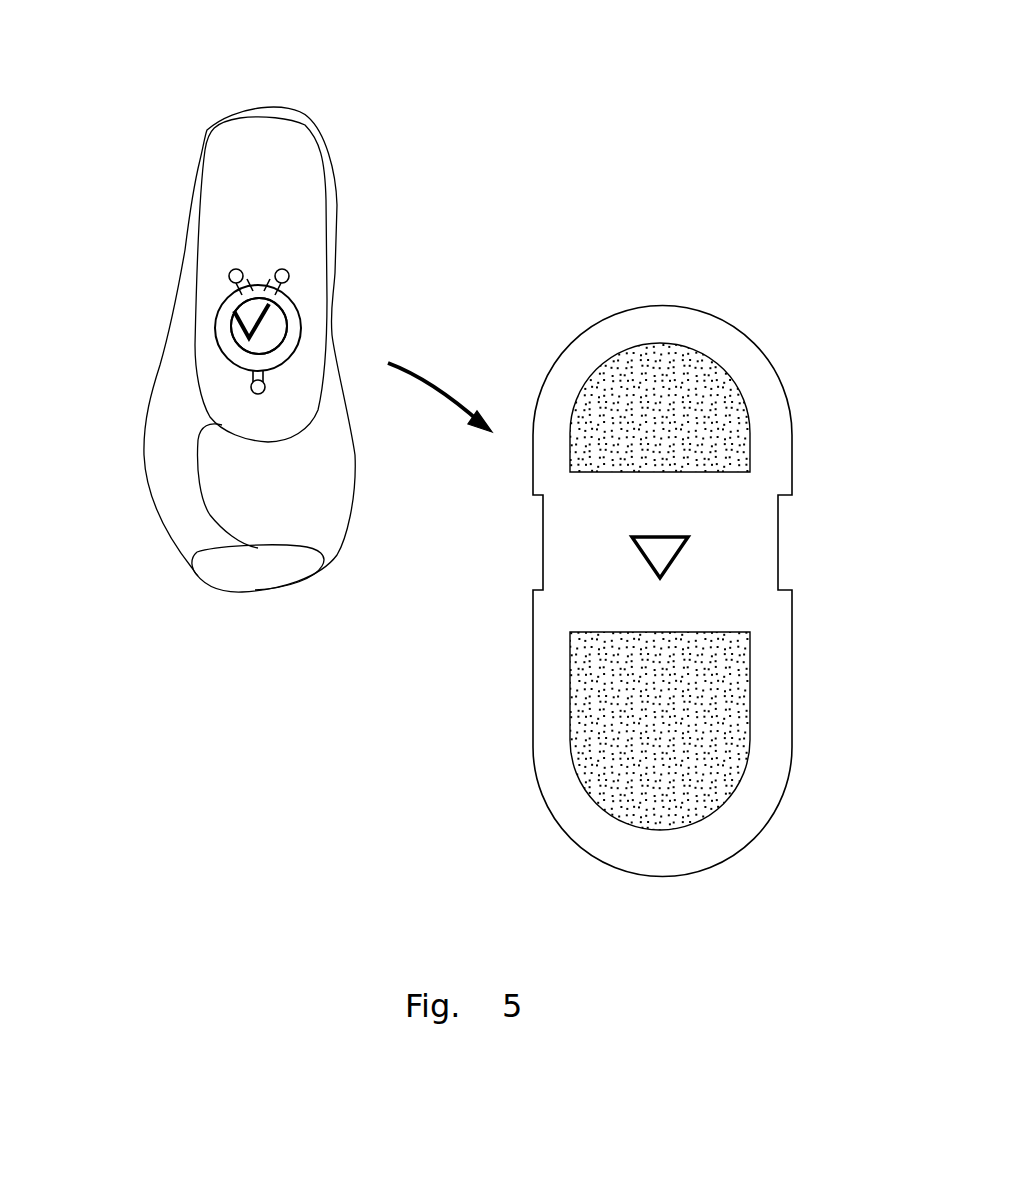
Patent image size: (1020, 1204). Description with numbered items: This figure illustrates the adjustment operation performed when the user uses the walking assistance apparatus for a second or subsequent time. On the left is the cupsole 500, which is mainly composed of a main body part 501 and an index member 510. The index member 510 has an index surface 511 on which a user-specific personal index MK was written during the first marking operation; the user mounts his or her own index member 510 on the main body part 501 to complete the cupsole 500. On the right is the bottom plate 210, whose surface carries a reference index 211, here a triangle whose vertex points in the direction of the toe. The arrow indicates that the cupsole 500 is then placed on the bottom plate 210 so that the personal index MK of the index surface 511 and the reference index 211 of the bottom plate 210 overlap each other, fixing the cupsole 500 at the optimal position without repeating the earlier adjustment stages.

The cupsole 500 is at (194, 112).
The main body part 501 is at (296, 167).
The index member 510 is at (218, 343).
The index surface 511 is at (272, 327).
The personal index MK is at (232, 327).
The bottom plate 210 is at (822, 349).
The reference index 211 is at (650, 568).